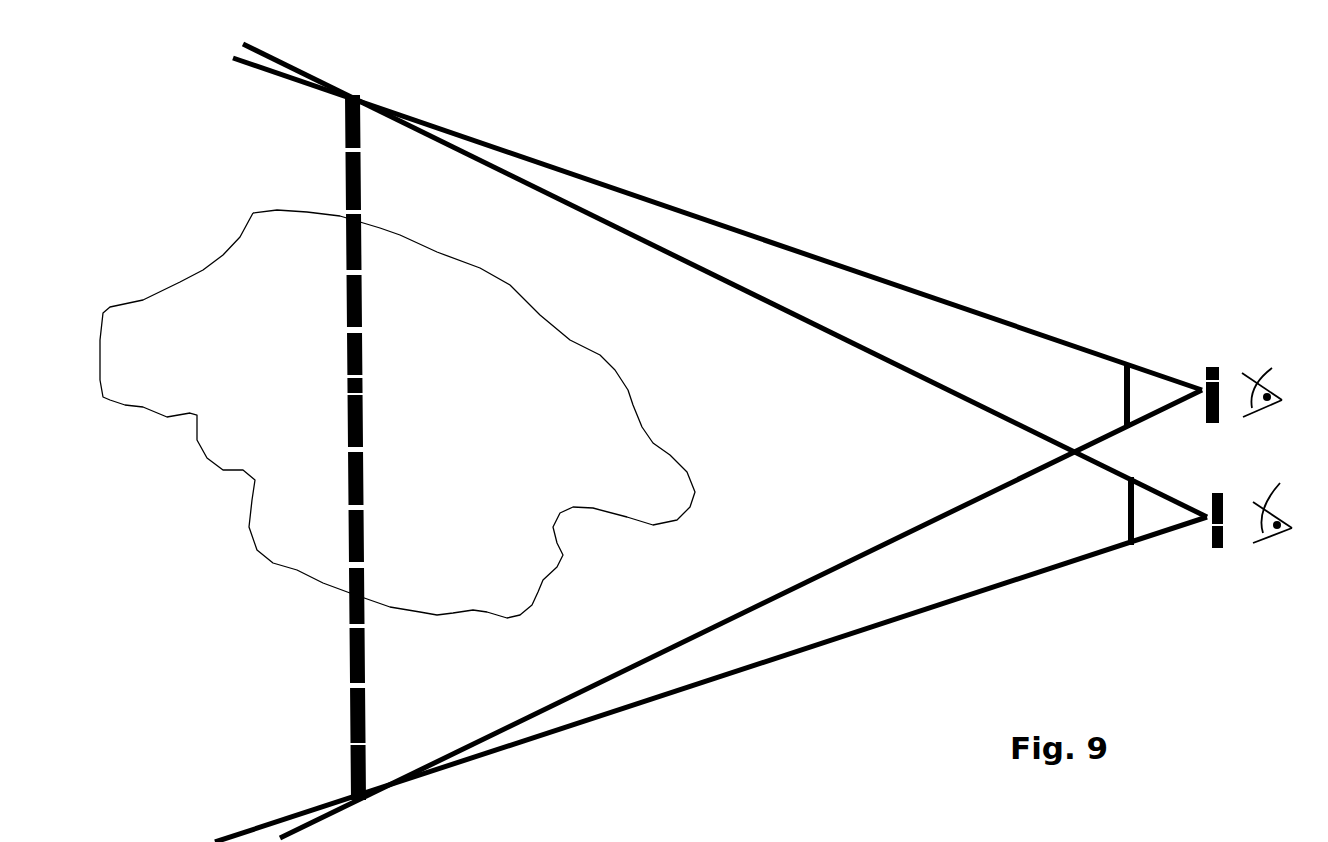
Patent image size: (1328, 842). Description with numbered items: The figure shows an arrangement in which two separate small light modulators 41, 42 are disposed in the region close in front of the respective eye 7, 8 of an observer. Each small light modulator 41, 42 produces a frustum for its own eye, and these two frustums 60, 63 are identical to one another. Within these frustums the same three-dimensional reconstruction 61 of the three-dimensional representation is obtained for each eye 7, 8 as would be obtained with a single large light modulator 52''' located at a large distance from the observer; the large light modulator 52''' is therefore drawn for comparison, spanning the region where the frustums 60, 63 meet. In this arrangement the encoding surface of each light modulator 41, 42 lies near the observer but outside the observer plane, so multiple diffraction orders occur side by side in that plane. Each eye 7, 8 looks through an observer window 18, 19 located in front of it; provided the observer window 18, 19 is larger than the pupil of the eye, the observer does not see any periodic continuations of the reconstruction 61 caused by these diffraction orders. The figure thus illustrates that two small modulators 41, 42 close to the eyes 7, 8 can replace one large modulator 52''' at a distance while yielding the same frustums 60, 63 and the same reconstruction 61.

The eye 7 is at (1267, 388).
The eye 8 is at (1274, 508).
The observer window 18 is at (1212, 367).
The observer window 19 is at (1215, 548).
The small light modulator 41 is at (1125, 404).
The small light modulator 42 is at (1128, 507).
The single large light modulator 52''' is at (398, 447).
The frustum 60 is at (847, 265).
The three-dimensional reconstruction 61 is at (638, 403).
The frustum 63 is at (973, 594).